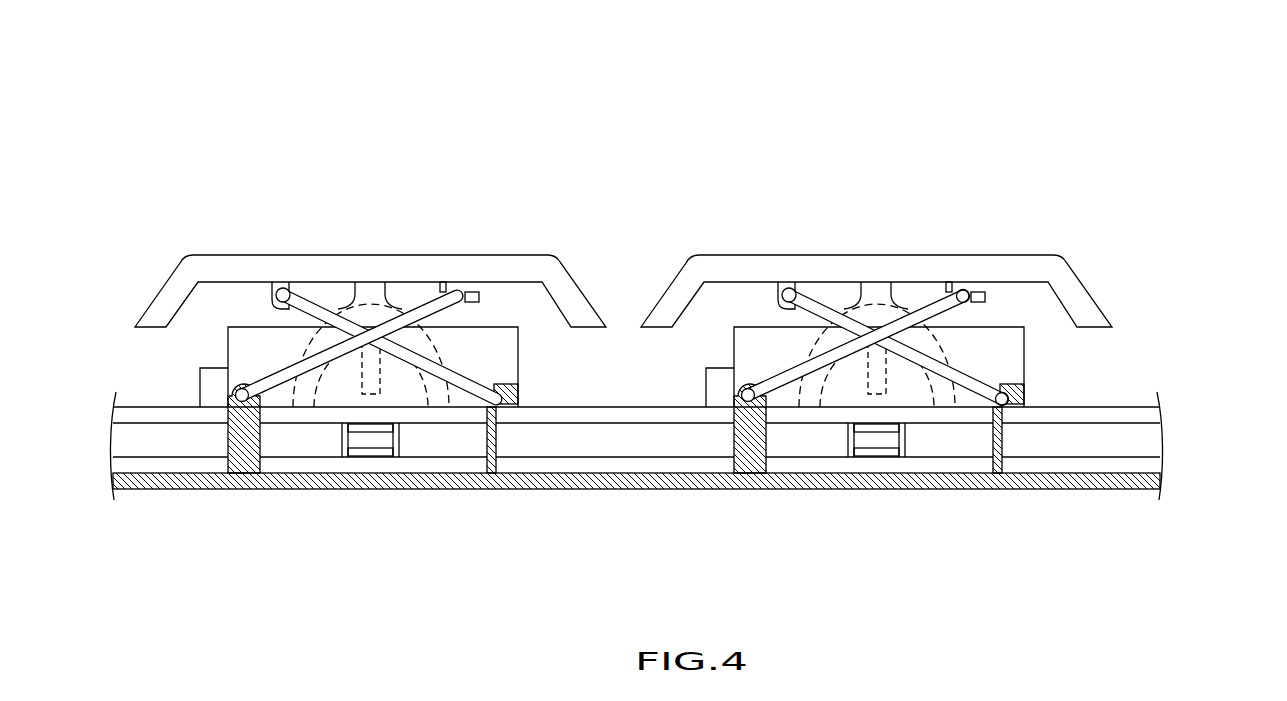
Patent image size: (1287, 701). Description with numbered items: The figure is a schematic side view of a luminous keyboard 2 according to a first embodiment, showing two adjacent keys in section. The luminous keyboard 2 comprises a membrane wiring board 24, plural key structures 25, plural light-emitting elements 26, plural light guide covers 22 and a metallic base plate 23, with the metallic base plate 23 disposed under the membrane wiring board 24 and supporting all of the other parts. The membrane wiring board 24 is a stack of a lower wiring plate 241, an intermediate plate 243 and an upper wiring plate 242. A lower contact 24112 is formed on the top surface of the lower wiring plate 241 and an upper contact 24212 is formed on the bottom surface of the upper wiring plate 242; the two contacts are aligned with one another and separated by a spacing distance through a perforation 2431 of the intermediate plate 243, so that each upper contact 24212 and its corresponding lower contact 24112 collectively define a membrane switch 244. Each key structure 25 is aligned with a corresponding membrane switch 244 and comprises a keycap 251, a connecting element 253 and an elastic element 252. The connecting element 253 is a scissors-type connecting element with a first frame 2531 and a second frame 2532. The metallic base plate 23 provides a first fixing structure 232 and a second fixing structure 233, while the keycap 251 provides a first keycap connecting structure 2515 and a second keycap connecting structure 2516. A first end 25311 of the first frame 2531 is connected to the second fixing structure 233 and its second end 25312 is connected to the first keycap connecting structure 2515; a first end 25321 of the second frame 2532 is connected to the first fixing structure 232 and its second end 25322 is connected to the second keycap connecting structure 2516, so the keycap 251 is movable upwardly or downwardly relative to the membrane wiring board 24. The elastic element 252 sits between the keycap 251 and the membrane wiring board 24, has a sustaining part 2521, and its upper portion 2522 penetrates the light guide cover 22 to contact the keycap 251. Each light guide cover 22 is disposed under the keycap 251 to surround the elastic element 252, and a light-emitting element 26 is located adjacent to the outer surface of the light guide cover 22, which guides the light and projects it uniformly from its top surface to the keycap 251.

The luminous keyboard 2 is at (1049, 157).
The light guide cover 22 is at (268, 338).
The metallic base plate 23 is at (541, 484).
The first fixing structure 232 is at (750, 452).
The second fixing structure 233 is at (1012, 384).
The membrane wiring board 24 is at (1230, 358).
The lower wiring plate 241 is at (1142, 462).
The upper wiring plate 242 is at (1124, 411).
The intermediate plate 243 is at (1128, 441).
The membrane switch 244 is at (980, 548).
The upper contact 24212 is at (873, 428).
The lower contact 24112 is at (877, 457).
The perforation 2431 is at (873, 438).
The key structure 25 is at (760, 28).
The keycap 251 is at (213, 225).
The first keycap connecting structure 2515 is at (775, 303).
The second keycap connecting structure 2516 is at (975, 298).
The elastic element 252 is at (368, 309).
The sustaining part 2521 is at (873, 365).
The upper portion 2522 is at (876, 293).
The connecting element 253 is at (696, 85).
The first frame 2531 is at (620, 57).
The first end of the first frame 25311 is at (1115, 516).
The second end of the first frame 25312 is at (790, 291).
The second frame 2532 is at (620, 125).
The first end of the second frame 25321 is at (622, 528).
The second end of the second frame 25322 is at (1030, 235).
The light-emitting element 26 is at (210, 398).